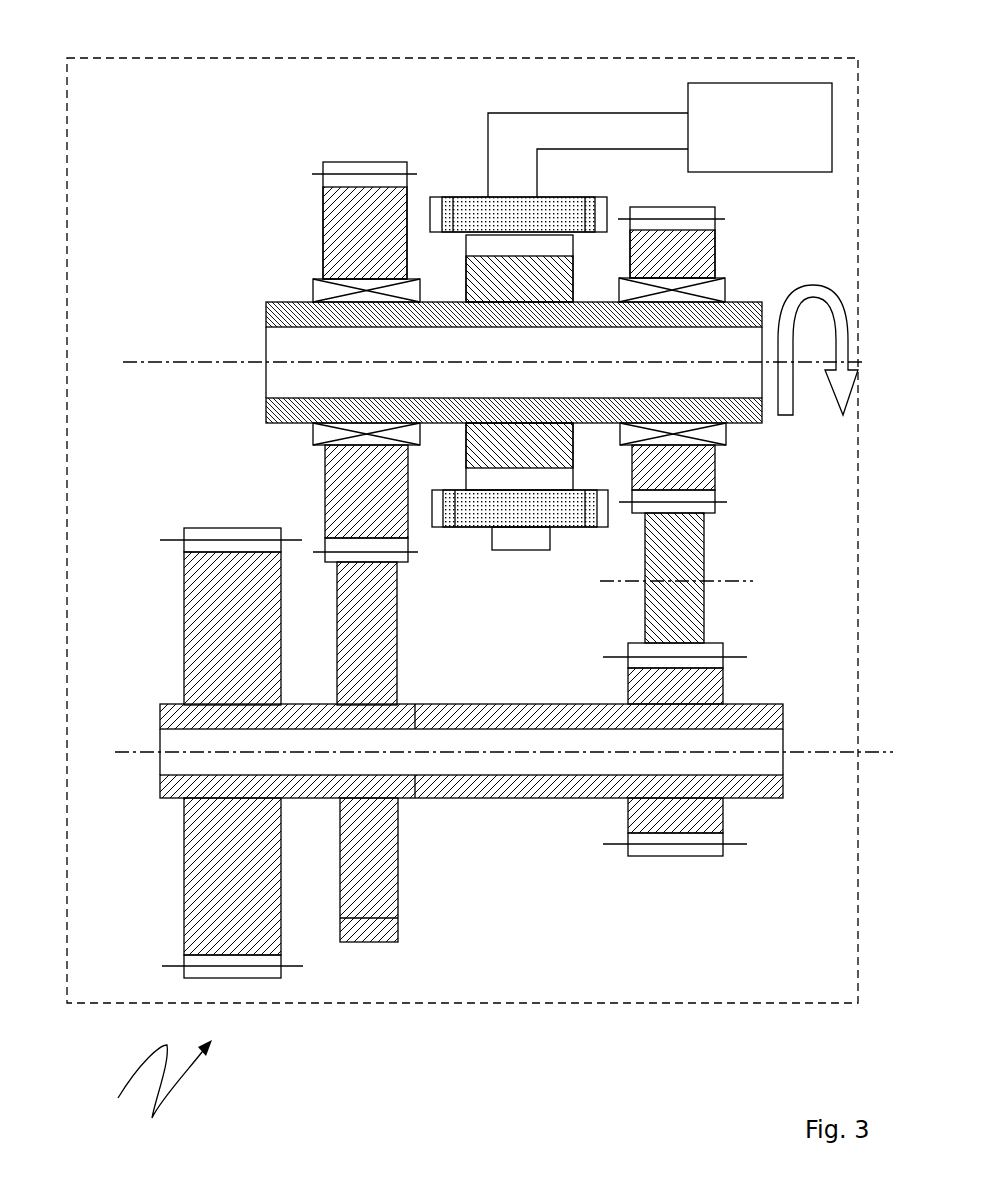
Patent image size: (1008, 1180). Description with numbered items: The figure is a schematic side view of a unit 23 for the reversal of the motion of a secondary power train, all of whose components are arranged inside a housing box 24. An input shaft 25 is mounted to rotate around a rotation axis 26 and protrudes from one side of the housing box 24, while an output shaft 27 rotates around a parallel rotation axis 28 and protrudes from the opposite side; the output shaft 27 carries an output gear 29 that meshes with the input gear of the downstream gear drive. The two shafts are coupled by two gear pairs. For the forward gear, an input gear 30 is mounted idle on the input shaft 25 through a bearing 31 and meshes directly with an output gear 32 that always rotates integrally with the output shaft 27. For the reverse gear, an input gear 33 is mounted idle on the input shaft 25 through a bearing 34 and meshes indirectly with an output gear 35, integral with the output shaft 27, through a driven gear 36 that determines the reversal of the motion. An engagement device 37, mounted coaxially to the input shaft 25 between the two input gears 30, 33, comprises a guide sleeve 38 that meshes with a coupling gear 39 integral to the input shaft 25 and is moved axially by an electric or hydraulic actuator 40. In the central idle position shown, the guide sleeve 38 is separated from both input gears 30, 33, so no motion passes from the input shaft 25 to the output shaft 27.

The unit for the reversal of the motion 23 is at (152, 1086).
The housing box 24 is at (430, 1003).
The input shaft 25 is at (753, 403).
The rotation axis 26 is at (153, 364).
The output shaft 27 is at (300, 790).
The rotation axis 28 is at (115, 752).
The output gear 29 is at (193, 973).
The input gear of the forward gear 30 is at (340, 193).
The bearing 31 is at (318, 432).
The output gear of the forward gear 32 is at (393, 900).
The input gear of the reverse gear 33 is at (690, 213).
The bearing 34 is at (713, 289).
The output gear of the reverse gear 35 is at (693, 820).
The driven gear 36 is at (690, 622).
The engagement device 37 is at (487, 62).
The guide sleeve 38 is at (468, 197).
The hub 39 is at (483, 252).
The actuator 40 is at (760, 127).